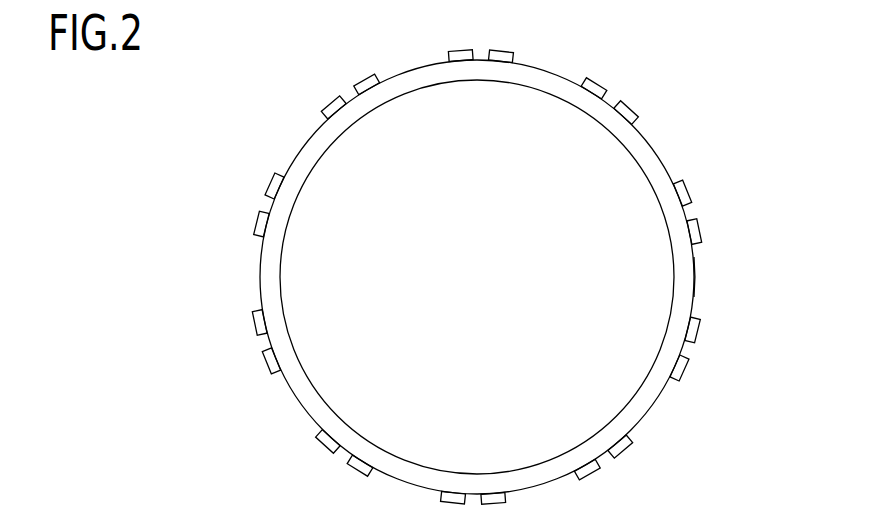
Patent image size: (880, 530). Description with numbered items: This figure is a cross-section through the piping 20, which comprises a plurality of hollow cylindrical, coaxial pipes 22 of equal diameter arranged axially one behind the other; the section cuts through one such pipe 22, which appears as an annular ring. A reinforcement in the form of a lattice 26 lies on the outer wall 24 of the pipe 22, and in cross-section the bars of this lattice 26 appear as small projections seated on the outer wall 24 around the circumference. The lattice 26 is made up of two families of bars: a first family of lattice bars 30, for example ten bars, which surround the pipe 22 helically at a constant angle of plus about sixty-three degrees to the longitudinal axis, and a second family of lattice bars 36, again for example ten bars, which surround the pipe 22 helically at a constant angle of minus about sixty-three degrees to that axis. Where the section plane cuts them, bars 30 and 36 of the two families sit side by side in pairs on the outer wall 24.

The piping 20 is at (290, 127).
The pipe 22 is at (652, 157).
The outer wall 24 is at (693, 280).
The lattice 26 is at (693, 333).
The lattice bar 30 is at (500, 53).
The lattice bar 36 is at (467, 52).